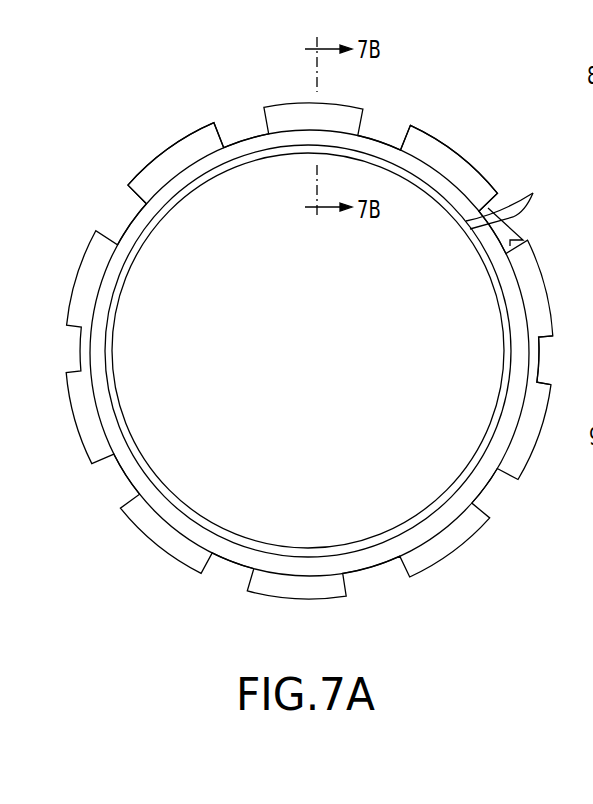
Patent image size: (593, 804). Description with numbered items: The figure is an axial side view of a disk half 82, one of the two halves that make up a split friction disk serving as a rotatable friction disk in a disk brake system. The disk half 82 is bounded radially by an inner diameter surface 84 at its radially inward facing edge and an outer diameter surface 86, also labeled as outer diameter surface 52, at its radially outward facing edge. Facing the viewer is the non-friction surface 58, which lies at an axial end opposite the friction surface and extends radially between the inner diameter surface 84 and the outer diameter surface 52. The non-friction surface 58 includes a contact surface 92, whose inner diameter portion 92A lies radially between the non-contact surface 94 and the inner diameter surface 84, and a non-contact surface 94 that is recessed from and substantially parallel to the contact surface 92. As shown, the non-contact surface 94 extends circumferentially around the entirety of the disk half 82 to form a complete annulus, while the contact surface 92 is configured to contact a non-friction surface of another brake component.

The outer diameter surface 52 is at (302, 103).
The non-friction surface 58 is at (533, 193).
The disk half 82 is at (441, 88).
The inner diameter surface 84 is at (255, 160).
The outer diameter surface 86 is at (240, 130).
The contact surface 92 is at (538, 350).
The inner diameter portion of contact surface 92A is at (508, 350).
The non-contact surface 94 is at (522, 367).